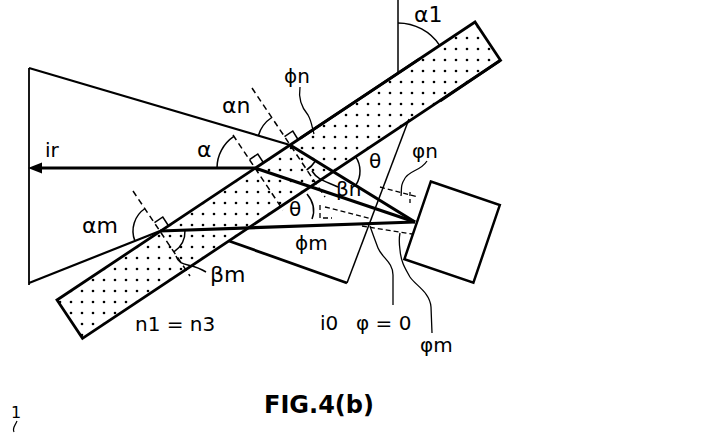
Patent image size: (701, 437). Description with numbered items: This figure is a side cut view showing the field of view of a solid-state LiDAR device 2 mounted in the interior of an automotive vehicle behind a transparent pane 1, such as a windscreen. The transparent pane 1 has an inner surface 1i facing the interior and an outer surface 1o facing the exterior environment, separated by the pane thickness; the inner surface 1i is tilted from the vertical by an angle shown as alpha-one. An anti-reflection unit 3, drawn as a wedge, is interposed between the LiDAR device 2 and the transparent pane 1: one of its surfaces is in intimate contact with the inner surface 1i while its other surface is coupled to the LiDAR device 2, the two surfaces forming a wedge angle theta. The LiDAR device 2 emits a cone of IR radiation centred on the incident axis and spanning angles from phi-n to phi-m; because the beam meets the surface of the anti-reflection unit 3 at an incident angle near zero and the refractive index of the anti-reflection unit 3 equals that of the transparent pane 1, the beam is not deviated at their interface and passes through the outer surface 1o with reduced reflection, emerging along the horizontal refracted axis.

The transparent pane 1 is at (372, 42).
The outer surface of the pane 1o is at (358, 98).
The inner surface of the pane 1i is at (493, 88).
The LiDAR device 2 is at (485, 151).
The anti-reflection unit 3 is at (345, 248).